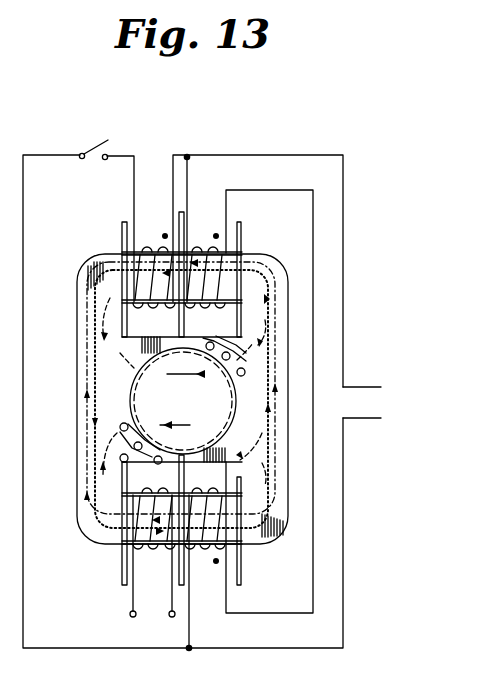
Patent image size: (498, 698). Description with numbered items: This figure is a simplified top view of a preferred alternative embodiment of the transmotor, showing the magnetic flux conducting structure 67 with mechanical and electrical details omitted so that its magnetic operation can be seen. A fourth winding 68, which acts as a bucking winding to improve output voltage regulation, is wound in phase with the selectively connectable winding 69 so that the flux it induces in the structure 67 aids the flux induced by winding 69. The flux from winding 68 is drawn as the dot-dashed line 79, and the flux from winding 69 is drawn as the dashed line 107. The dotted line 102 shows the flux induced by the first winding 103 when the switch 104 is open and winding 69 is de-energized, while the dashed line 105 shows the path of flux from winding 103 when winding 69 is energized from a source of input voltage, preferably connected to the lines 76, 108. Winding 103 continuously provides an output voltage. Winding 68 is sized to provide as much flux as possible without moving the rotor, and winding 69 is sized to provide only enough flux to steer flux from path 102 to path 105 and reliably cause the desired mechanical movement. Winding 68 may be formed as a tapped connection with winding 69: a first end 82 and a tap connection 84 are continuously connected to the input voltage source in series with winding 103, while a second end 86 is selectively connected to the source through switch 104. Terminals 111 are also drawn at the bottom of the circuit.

The magnetic flux conducting structure 67 is at (267, 257).
The fourth winding 68 is at (200, 220).
The selectively connectable winding 69 is at (155, 178).
The line 76 is at (366, 387).
The dot-dashed line 79 is at (273, 323).
The first end 82 is at (228, 210).
The tap connection 84 is at (187, 157).
The second end 86 is at (134, 203).
The dotted line 102 is at (268, 415).
The first winding 103 is at (207, 575).
The switch 104 is at (100, 141).
The dashed line 105 is at (180, 423).
The dashed line 107 is at (182, 378).
The line 108 is at (366, 418).
The terminals 111 is at (157, 575).